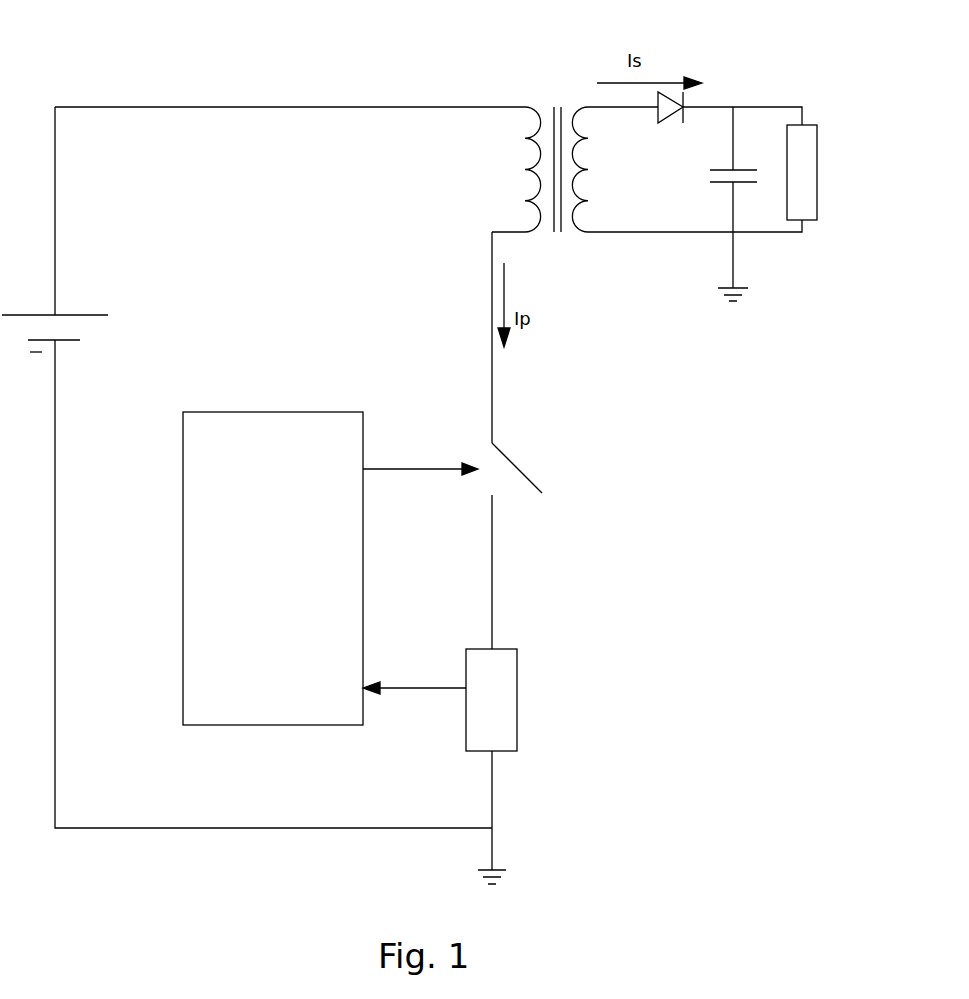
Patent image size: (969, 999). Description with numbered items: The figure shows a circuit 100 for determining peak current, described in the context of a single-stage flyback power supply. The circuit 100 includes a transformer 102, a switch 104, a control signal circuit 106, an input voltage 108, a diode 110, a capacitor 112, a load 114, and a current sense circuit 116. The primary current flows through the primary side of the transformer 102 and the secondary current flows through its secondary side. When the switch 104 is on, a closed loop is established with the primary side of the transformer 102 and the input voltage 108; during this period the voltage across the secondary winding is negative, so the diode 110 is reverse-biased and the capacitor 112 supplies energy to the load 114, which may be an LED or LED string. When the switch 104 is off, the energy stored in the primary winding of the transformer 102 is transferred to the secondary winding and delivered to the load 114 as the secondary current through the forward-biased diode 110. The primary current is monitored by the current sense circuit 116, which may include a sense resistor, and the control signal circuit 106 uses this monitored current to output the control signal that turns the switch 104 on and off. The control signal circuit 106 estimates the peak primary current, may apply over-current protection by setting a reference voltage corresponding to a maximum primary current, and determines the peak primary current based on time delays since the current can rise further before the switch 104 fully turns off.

The circuit 100 is at (122, 42).
The transformer 102 is at (530, 109).
The switch 104 is at (528, 484).
The control signal circuit 106 is at (276, 412).
The input voltage 108 is at (80, 340).
The diode 110 is at (660, 123).
The capacitor 112 is at (711, 177).
The load 114 is at (817, 221).
The current sense circuit 116 is at (476, 649).